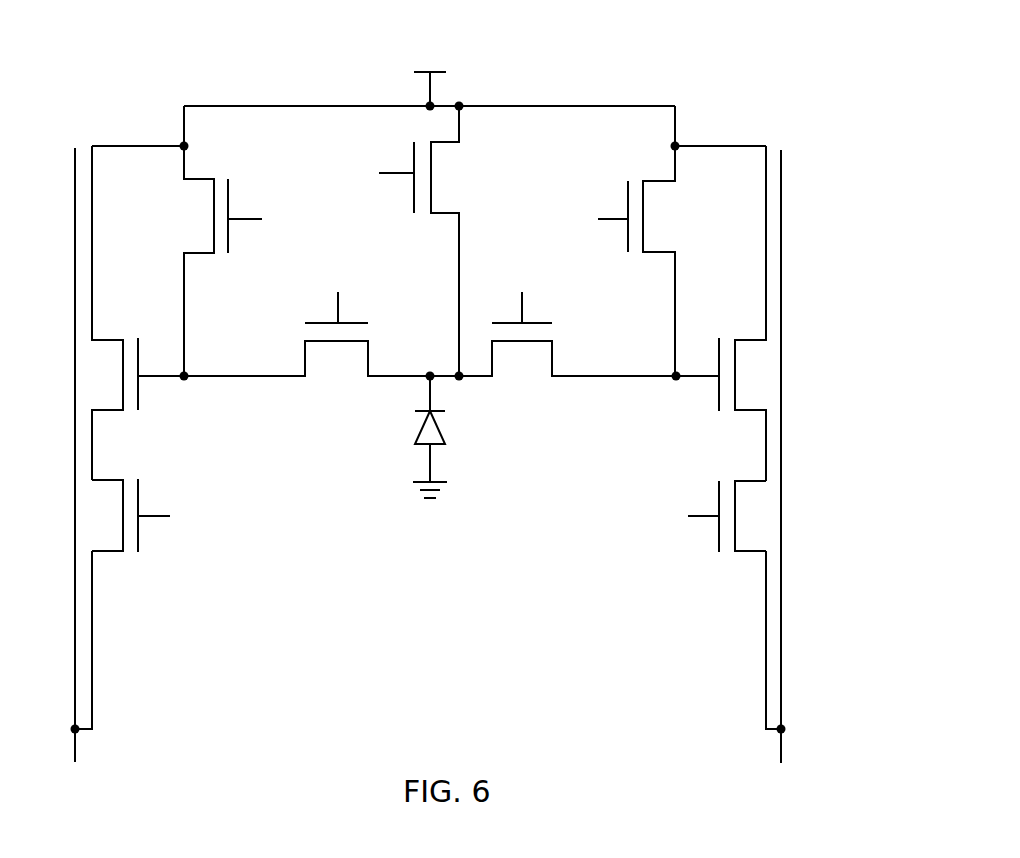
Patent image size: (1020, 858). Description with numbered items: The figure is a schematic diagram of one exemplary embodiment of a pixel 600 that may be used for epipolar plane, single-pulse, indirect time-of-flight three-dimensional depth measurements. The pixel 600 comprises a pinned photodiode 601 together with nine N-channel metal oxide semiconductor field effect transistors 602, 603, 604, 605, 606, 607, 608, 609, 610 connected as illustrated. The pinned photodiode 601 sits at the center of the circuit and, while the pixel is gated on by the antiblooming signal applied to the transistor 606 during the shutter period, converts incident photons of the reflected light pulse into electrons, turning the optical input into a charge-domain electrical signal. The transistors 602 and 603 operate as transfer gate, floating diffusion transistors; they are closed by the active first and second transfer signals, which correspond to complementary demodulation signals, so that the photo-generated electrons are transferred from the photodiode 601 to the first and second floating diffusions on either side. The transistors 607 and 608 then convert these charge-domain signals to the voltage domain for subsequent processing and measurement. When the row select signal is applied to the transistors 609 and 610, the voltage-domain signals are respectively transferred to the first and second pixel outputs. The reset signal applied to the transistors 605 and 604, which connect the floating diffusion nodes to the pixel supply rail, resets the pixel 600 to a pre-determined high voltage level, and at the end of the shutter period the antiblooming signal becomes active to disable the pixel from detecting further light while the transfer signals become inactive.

The pixel 600 is at (133, 77).
The pinned photodiode 601 is at (455, 437).
The transfer gate transistor 602 is at (307, 321).
The transfer gate transistor 603 is at (553, 321).
The N-channel MOSFET 604 is at (611, 241).
The N-channel MOSFET 605 is at (247, 241).
The N-channel MOSFET 606 is at (446, 241).
The N-channel MOSFET 607 is at (138, 313).
The N-channel MOSFET 608 is at (721, 313).
The N-channel MOSFET 609 is at (160, 521).
The N-channel MOSFET 610 is at (696, 525).